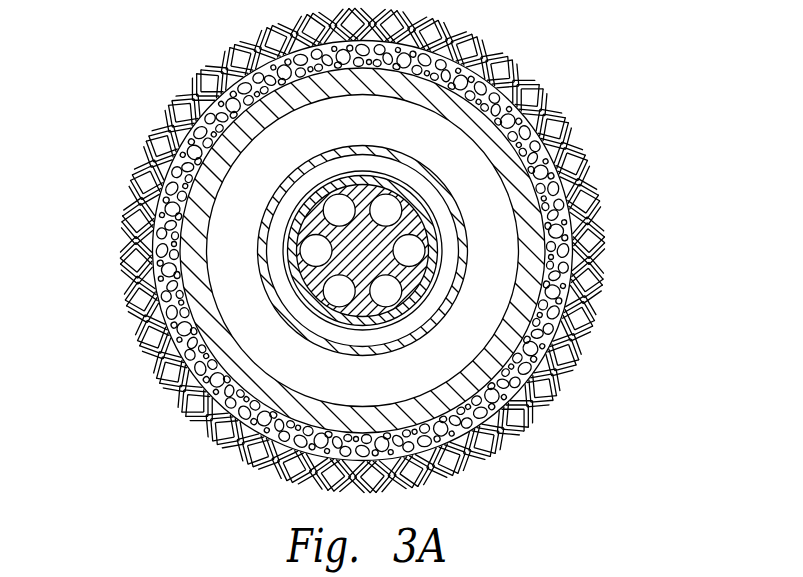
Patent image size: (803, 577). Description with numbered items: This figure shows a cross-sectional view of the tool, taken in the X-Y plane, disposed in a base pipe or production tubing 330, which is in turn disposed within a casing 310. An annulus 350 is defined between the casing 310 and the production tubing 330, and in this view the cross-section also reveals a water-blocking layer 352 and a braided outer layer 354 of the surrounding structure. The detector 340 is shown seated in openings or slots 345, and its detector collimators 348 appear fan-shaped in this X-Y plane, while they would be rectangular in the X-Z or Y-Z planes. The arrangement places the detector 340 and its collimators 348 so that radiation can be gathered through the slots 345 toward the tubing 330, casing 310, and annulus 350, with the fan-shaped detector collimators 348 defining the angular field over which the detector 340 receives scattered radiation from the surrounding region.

The casing 310 is at (488, 143).
The production tubing 330 is at (462, 233).
The detector 340 is at (415, 252).
The slots 345 is at (404, 286).
The detector collimators 348 is at (411, 279).
The annulus 350 is at (468, 178).
The water-blocking layer 352 is at (173, 208).
The braided outer layer 354 is at (143, 268).